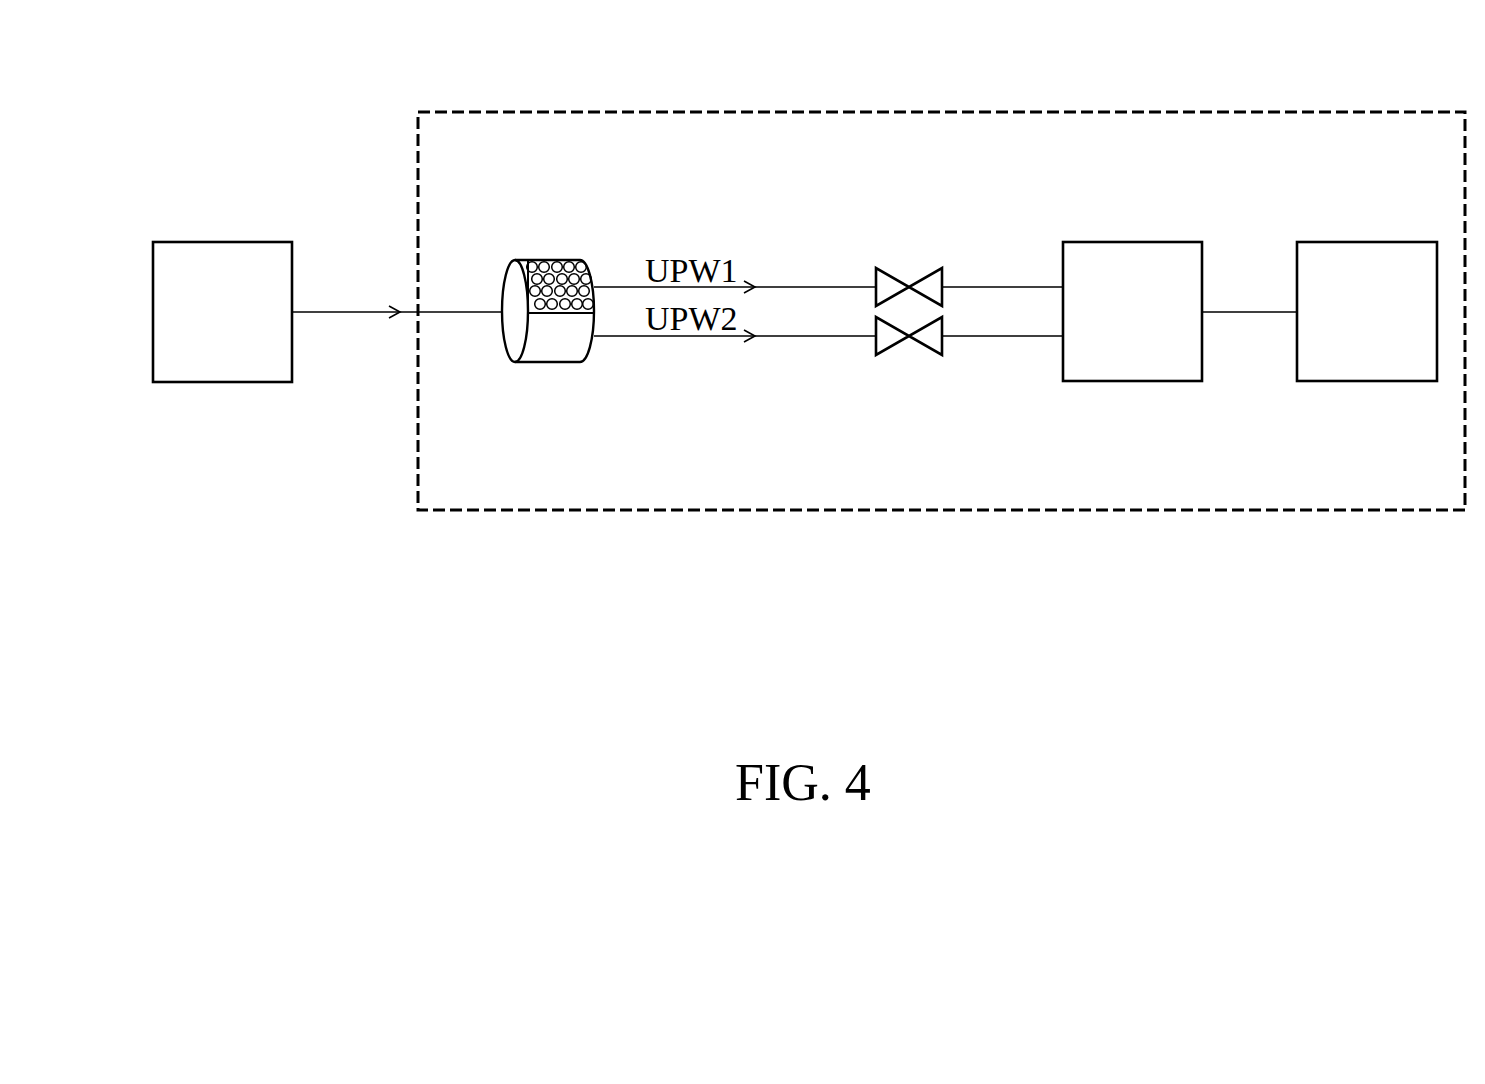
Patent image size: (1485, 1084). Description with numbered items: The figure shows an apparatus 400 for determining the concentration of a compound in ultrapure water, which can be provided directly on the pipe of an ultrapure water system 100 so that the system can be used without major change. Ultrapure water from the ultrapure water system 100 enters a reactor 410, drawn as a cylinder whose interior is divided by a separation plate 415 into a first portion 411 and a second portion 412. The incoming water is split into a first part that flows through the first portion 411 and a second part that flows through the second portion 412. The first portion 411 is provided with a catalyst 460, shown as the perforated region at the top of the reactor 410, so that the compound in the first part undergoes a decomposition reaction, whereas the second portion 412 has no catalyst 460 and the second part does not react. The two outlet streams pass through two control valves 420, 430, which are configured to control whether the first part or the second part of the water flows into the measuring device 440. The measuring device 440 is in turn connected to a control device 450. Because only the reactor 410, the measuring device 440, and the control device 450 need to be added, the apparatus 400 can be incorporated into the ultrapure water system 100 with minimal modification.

The ultrapure water system 100 is at (192, 140).
The apparatus 400 is at (933, 111).
The reactor 410 is at (572, 297).
The first portion 411 is at (585, 241).
The second portion 412 is at (542, 348).
The separation plate 415 is at (567, 314).
The catalyst 460 is at (587, 278).
The control valve 420 is at (895, 270).
The control valve 430 is at (895, 353).
The measuring device 440 is at (1132, 241).
The control device 450 is at (1367, 241).